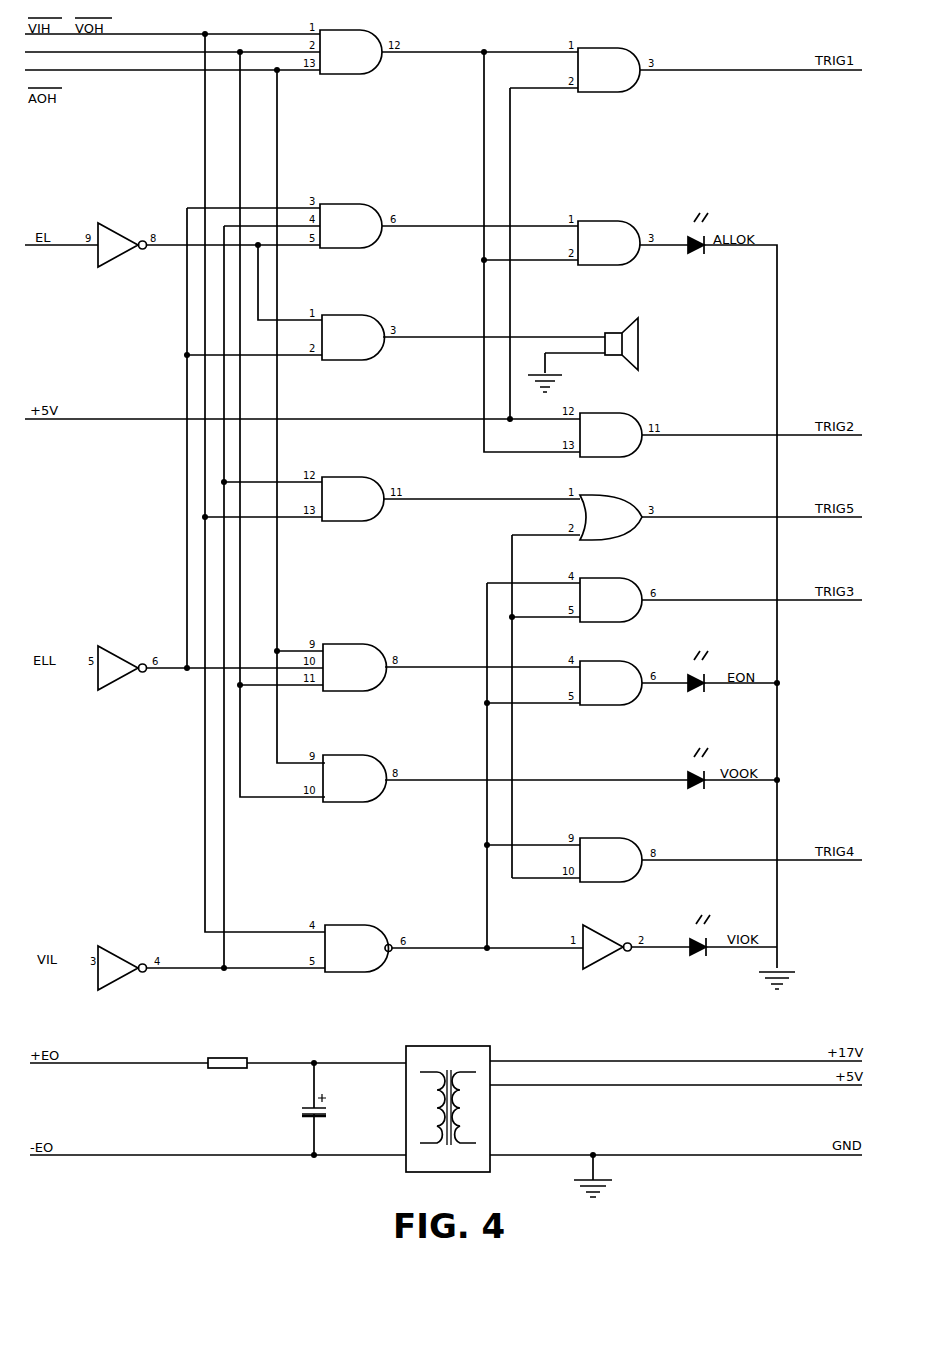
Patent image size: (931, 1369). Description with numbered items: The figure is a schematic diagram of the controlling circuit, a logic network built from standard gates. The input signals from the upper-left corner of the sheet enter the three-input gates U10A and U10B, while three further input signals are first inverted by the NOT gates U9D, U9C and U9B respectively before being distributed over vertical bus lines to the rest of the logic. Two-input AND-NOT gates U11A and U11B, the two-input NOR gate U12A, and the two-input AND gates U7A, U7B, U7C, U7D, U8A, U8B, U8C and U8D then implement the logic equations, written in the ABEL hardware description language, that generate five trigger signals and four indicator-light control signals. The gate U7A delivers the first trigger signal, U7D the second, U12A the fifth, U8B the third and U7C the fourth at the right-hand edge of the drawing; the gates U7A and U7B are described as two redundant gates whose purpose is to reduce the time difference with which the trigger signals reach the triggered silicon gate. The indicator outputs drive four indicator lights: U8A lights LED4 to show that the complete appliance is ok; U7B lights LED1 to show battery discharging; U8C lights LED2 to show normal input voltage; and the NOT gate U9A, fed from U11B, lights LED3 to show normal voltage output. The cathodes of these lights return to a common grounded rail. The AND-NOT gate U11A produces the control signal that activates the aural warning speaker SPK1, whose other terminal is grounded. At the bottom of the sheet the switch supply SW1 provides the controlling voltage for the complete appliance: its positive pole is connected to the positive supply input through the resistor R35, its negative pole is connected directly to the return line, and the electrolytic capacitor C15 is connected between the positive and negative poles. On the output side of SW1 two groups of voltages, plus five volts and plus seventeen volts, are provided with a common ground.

The three-input AND gate U10A is at (351, 52).
The three-input AND gate U10B is at (351, 226).
The two-input AND-NOT gate U11A is at (353, 338).
The two-input AND-NOT gate U11B is at (358, 949).
The two-input AND gate U8A is at (609, 243).
The two-input AND gate U8B is at (611, 601).
The two-input AND gate U8C is at (354, 779).
The two-input AND gate U8D is at (353, 499).
The two-input AND gate U7A is at (609, 70).
The two-input AND gate U7B is at (611, 684).
The two-input AND gate U7C is at (611, 864).
The two-input AND gate U7D is at (611, 436).
The two-input NOR gate U12A is at (611, 518).
The NOT gate U9A is at (604, 950).
The NOT gate U9B is at (121, 968).
The NOT gate U9C is at (121, 670).
The NOT gate U9D is at (121, 247).
The indicator light LED1 is at (684, 687).
The indicator light LED2 is at (684, 782).
The indicator light LED3 is at (685, 951).
The indicator light LED4 is at (682, 248).
The aural warning SPK1 is at (620, 353).
The resistor R35 is at (234, 1054).
The electrolytic capacitor C15 is at (304, 1109).
The switch supply SW1 is at (448, 1097).